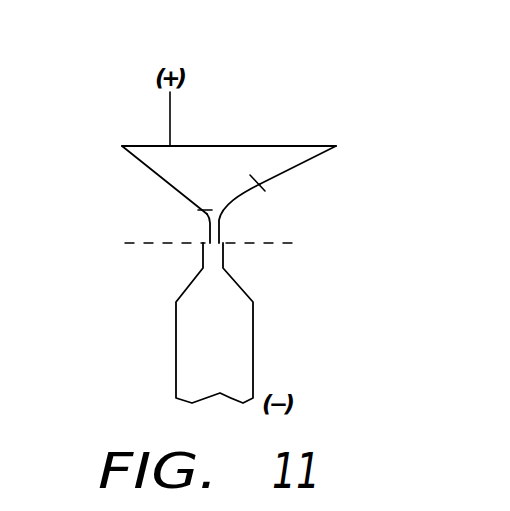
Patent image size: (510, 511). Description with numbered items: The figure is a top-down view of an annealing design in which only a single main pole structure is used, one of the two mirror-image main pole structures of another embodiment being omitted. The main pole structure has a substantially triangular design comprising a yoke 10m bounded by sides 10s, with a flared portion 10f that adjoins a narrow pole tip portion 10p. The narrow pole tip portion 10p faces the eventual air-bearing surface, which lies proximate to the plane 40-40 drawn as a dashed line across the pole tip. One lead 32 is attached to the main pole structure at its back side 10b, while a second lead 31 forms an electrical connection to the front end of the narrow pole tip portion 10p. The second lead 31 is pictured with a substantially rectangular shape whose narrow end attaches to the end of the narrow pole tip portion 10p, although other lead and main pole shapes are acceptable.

The lead 32 is at (170, 115).
The back side 10b is at (270, 146).
The sides 10s is at (157, 180).
The yoke 10m is at (262, 188).
The flared portion 10f is at (203, 210).
The narrow pole tip portion 10p is at (219, 228).
The plane 40- 40 is at (213, 244).
The second lead 31 is at (187, 346).